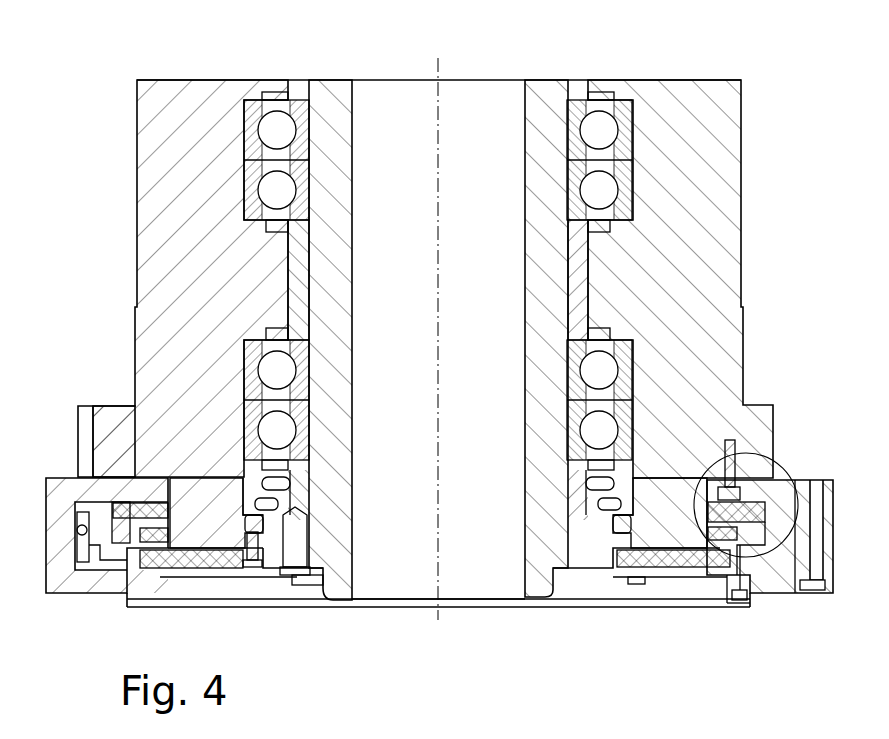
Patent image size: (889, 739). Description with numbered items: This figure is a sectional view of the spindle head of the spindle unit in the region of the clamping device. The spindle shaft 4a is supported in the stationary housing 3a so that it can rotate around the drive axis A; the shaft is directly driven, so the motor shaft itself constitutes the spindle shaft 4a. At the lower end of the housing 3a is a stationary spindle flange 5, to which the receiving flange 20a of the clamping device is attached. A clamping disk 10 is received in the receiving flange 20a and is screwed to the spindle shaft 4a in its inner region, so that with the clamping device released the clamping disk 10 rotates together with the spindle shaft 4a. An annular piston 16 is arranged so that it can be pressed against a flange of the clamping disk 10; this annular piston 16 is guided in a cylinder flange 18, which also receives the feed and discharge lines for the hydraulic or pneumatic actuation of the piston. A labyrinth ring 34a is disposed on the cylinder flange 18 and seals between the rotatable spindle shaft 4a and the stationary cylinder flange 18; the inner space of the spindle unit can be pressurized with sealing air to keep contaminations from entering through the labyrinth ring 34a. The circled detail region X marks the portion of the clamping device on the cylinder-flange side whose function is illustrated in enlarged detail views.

The housing 3a is at (705, 175).
The spindle shaft 4a is at (335, 118).
The spindle flange 5 is at (118, 420).
The receiving flange 20a is at (57, 478).
The annular piston 16 is at (100, 562).
The clamping disk 10 is at (217, 560).
The cylinder flange 18 is at (779, 580).
The labyrinth ring 34a is at (736, 604).
The detail circle X is at (783, 462).
The drive axis A is at (431, 355).